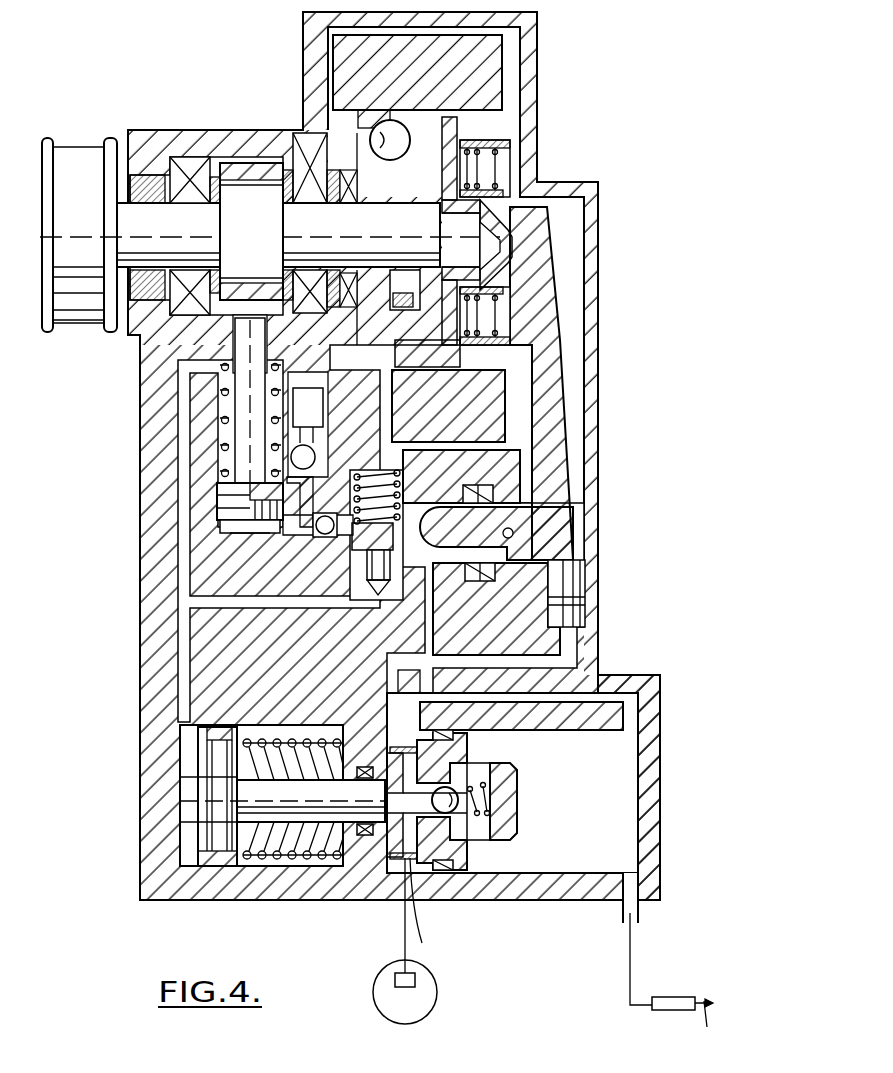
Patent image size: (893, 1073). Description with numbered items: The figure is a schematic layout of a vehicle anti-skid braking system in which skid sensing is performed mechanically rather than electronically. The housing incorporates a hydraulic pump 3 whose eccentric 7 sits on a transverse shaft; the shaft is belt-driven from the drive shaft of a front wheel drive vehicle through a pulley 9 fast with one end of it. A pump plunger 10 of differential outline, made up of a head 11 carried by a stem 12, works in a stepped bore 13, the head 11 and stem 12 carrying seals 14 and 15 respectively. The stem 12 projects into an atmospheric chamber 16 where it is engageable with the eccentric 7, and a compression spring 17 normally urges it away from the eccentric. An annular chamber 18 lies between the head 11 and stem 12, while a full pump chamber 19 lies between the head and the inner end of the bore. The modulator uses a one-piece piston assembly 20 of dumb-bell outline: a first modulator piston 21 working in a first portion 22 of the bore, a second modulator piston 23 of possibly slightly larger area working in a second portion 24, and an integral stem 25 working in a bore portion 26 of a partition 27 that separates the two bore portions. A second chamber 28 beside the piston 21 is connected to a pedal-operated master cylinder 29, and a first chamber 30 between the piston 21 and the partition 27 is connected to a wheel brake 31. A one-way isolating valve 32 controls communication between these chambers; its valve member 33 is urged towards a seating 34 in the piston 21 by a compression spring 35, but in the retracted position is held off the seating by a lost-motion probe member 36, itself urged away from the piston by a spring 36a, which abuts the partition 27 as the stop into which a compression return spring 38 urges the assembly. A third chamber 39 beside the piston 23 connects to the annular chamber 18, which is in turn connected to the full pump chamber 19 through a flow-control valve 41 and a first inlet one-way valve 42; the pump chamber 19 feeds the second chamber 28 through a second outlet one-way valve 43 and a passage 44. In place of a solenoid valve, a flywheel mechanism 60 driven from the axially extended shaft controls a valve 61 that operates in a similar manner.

The hydraulic pump 3 is at (135, 339).
The eccentric 7 is at (233, 167).
The pulley 9 is at (67, 250).
The pump plunger 10 is at (242, 456).
The head 11 is at (215, 521).
The stem 12 is at (262, 345).
The stepped bore 13 is at (232, 342).
The seal 14 is at (220, 498).
The seal 15 is at (232, 360).
The atmospheric chamber 16 is at (243, 163).
The compression spring 17 is at (227, 447).
The annular chamber 18 is at (300, 205).
The full pump chamber 19 is at (232, 533).
The piston assembly 20 is at (291, 795).
The first modulator piston 21 is at (453, 753).
The first portion of the bore 22 is at (602, 727).
The second modulator piston 23 is at (201, 850).
The second portion of the bore 24 is at (266, 738).
The stem 25 is at (330, 790).
The bore portion 26 is at (358, 830).
The partition 27 is at (366, 855).
The second chamber 28 is at (620, 824).
The master cylinder 29 is at (670, 1010).
The first chamber 30 is at (410, 870).
The wheel brake 31 is at (396, 980).
The one-way isolating valve 32 is at (452, 797).
The valve member 33 is at (478, 815).
The seating 34 is at (450, 813).
The compression spring 35 is at (494, 833).
The lost-motion probe member 36 is at (391, 773).
The spring 36a is at (475, 969).
The compression return spring 38 is at (243, 857).
The third chamber 39 is at (186, 840).
The flow-control valve 41 is at (312, 408).
The first inlet one-way valve 42 is at (318, 452).
The second outlet one-way valve 43 is at (320, 537).
The passage 44 is at (562, 700).
The flywheel mechanism 60 is at (495, 230).
The valve 61 is at (372, 586).